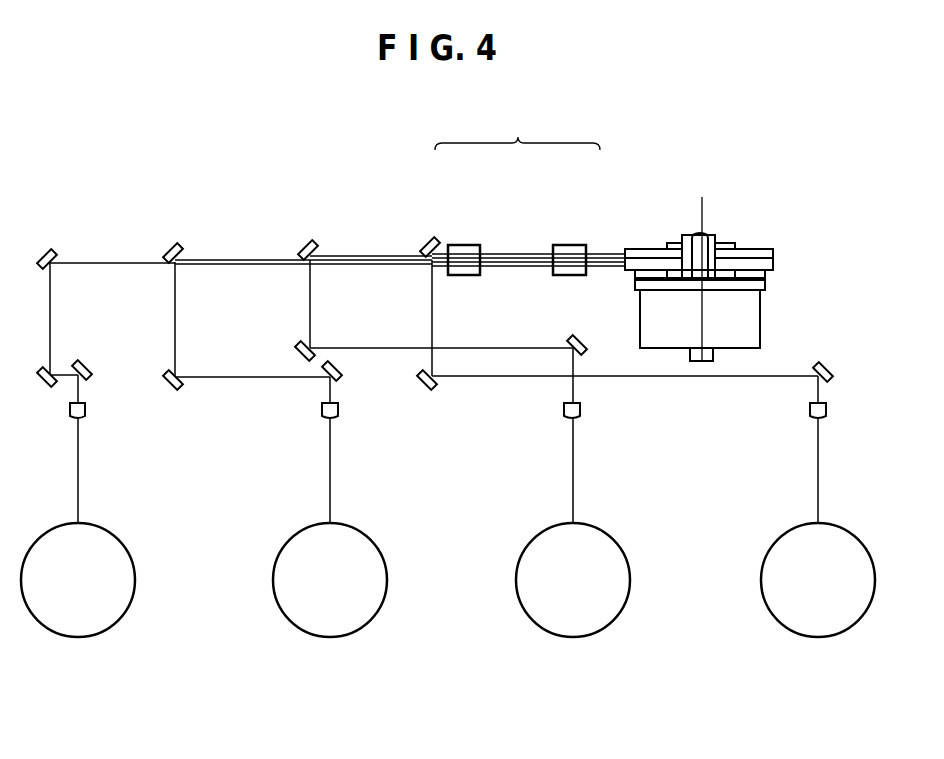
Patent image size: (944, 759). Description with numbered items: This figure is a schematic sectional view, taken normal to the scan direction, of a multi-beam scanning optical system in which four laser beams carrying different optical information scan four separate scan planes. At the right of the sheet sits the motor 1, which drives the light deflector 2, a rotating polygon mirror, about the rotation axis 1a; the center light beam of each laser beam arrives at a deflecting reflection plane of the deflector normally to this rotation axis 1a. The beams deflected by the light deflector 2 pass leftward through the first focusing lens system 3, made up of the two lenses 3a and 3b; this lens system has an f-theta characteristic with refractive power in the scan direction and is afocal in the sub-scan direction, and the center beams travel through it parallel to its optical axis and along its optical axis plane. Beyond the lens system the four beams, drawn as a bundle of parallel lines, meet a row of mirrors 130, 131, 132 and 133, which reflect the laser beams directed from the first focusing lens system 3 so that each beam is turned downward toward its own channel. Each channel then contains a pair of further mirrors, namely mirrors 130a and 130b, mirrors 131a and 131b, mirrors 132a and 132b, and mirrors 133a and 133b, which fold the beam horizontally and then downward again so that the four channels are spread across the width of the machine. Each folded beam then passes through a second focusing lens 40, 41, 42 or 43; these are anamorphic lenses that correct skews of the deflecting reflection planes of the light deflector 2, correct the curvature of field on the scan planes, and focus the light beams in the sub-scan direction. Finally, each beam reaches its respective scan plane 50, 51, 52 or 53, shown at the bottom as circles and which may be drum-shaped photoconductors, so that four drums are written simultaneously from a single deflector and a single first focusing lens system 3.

The motor 1 is at (753, 330).
The rotation axis 1a is at (702, 208).
The light deflector 2 is at (645, 249).
The first focusing lens system 3 is at (517, 129).
The lens 3a is at (569, 245).
The lens 3b is at (464, 245).
The mirror 130 is at (425, 240).
The mirror 131 is at (303, 242).
The mirror 132 is at (170, 245).
The mirror 133 is at (50, 250).
The mirror 130a is at (430, 390).
The mirror 130b is at (805, 384).
The mirror 131a is at (298, 344).
The mirror 131b is at (568, 340).
The mirror 132a is at (175, 388).
The mirror 132b is at (322, 380).
The mirror 133a is at (46, 389).
The mirror 133b is at (89, 378).
The second focusing lens 40 is at (810, 412).
The second focusing lens 41 is at (581, 410).
The second focusing lens 42 is at (340, 410).
The second focusing lens 43 is at (86, 410).
The scan plane 50 is at (775, 540).
The scan plane 51 is at (620, 544).
The scan plane 52 is at (377, 543).
The scan plane 53 is at (124, 543).